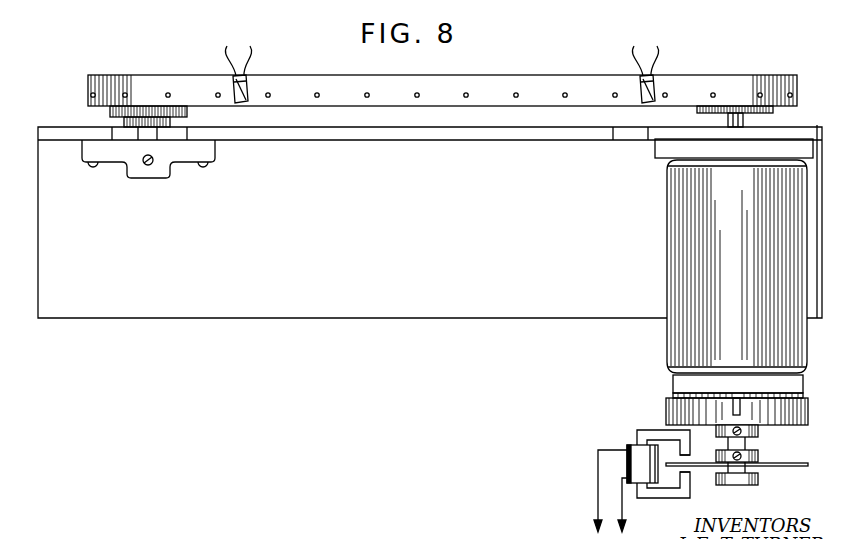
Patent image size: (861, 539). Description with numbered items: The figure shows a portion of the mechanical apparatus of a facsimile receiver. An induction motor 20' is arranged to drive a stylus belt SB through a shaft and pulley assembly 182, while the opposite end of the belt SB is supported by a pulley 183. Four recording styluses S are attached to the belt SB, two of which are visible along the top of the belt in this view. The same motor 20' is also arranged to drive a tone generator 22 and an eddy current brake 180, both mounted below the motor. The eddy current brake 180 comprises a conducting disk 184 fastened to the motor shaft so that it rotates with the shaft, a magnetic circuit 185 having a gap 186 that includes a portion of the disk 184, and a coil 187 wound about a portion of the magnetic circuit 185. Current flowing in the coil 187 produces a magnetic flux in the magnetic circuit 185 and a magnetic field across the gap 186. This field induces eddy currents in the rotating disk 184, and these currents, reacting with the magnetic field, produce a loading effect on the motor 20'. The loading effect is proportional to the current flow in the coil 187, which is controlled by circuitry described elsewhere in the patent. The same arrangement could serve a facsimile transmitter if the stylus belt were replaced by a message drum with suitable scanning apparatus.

The stylus belt SB is at (718, 75).
The recording styluses S is at (441, 66).
The pulley 183 is at (110, 112).
The shaft and pulley assembly 182 is at (727, 120).
The induction motor 20' is at (719, 256).
The tone generator 22 is at (660, 396).
The eddy current brake 180 is at (775, 457).
The conducting disk 184 is at (772, 468).
The magnetic circuit 185 is at (678, 492).
The gap 186 is at (693, 471).
The coil 187 is at (630, 446).